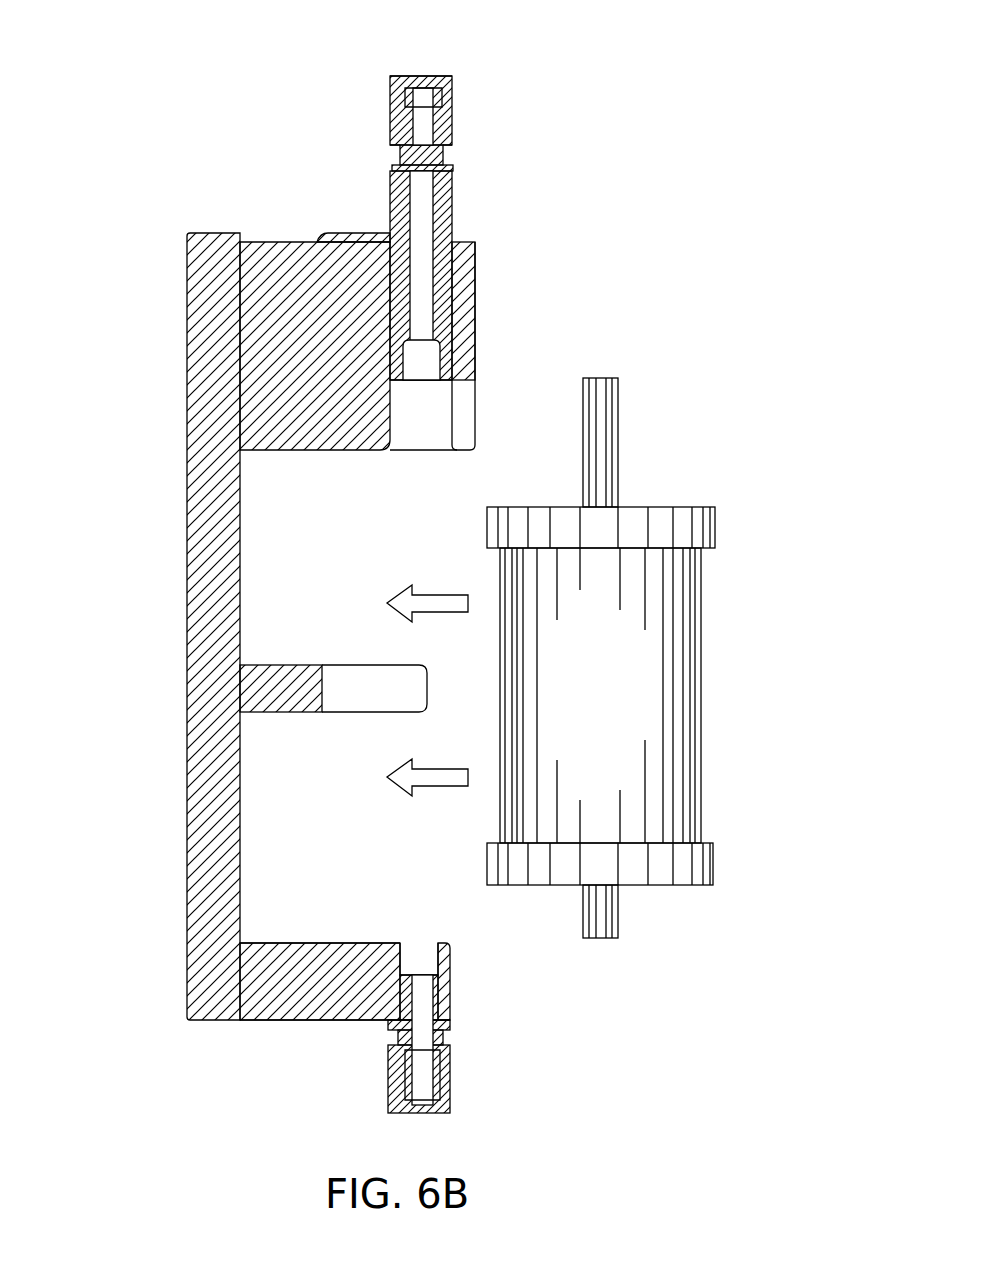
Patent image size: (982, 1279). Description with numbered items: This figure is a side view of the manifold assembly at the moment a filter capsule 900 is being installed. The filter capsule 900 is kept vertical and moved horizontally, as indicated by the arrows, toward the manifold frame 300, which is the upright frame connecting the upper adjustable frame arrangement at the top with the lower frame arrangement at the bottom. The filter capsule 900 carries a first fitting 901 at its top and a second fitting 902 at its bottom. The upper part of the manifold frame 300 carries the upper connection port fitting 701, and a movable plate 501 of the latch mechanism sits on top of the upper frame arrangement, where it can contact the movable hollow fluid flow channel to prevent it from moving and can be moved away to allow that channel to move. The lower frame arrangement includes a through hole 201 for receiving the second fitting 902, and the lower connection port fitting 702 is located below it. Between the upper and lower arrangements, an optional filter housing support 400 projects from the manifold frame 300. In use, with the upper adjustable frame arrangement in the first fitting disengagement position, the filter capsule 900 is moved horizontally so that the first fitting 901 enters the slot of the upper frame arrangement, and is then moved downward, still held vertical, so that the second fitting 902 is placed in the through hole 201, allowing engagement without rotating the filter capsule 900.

The manifold frame 300 is at (210, 810).
The filter housing support 400 is at (262, 668).
The movable plate 501 is at (343, 233).
The upper connection port fitting 701 is at (390, 82).
The lower connection port fitting 702 is at (390, 1075).
The through hole 201 is at (421, 963).
The filter capsule 900 is at (698, 678).
The first fitting 901 is at (610, 460).
The second fitting 902 is at (598, 915).